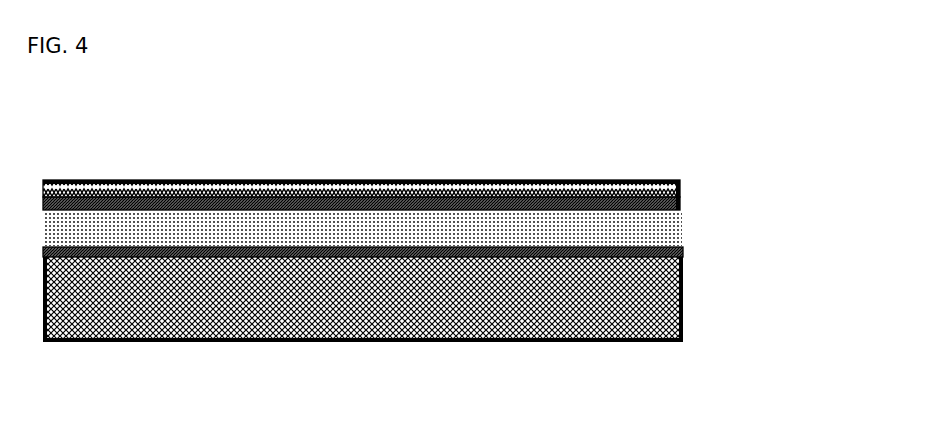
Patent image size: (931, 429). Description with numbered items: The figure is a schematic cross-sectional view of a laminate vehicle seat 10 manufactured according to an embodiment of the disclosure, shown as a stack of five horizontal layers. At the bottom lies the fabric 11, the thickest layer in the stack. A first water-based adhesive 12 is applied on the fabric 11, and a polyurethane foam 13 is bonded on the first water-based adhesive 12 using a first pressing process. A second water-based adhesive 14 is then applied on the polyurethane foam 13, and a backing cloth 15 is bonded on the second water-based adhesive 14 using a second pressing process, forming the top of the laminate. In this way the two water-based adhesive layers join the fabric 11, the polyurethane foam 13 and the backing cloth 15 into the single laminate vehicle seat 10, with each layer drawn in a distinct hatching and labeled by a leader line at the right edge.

The laminate vehicle seat 10 is at (127, 140).
The fabric 11 is at (665, 328).
The first water-based adhesive 12 is at (683, 250).
The polyurethane foam 13 is at (660, 228).
The second water-based adhesive 14 is at (680, 205).
The backing cloth 15 is at (680, 187).